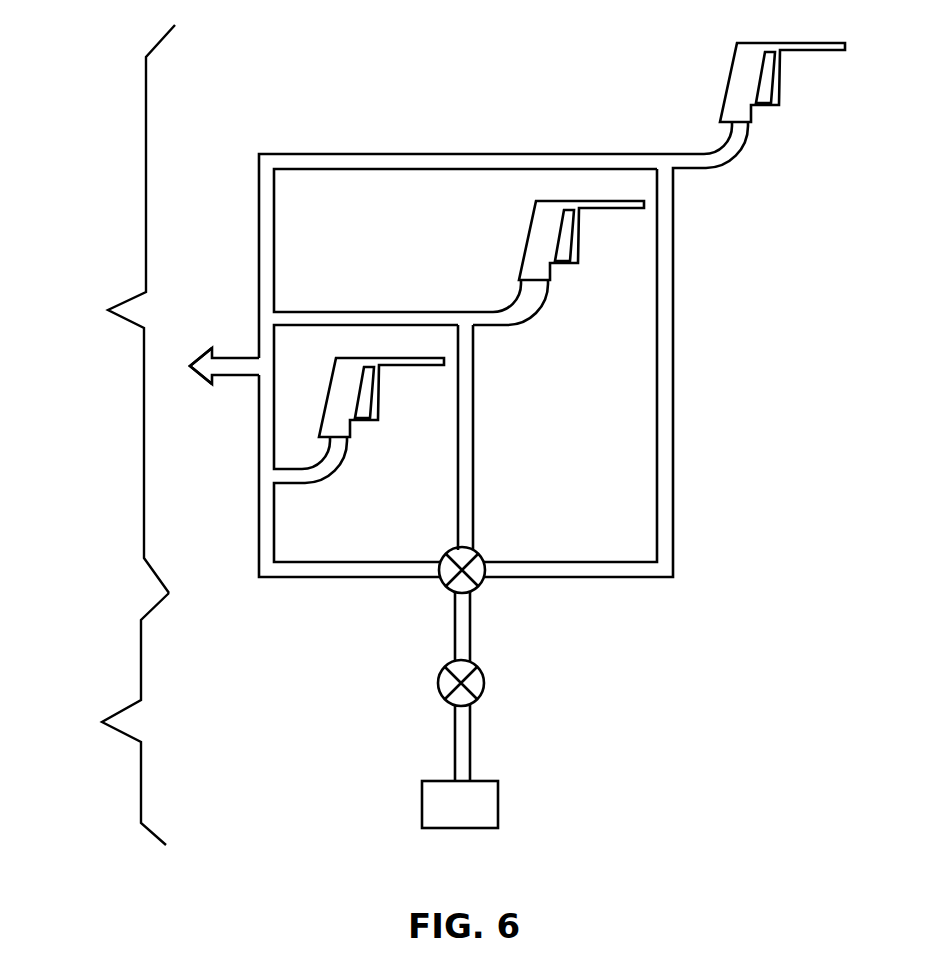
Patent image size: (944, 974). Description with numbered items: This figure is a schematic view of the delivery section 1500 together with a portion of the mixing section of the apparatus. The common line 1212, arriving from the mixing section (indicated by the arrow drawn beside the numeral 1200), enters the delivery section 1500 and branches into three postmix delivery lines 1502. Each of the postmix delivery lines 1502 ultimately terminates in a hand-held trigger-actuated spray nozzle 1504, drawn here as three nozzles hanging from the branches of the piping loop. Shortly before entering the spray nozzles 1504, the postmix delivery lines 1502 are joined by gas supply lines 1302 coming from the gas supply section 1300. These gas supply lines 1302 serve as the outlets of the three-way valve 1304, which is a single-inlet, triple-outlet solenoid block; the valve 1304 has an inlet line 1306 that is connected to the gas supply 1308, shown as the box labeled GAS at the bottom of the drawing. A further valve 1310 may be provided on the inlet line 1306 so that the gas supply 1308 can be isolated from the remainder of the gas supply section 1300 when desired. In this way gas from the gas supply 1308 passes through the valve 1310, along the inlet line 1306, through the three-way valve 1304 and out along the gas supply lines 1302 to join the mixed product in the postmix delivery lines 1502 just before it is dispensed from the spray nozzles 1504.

The delivery section 1500 is at (102, 309).
The postmix delivery line 1502 is at (444, 154).
The hand-held trigger-actuated spray nozzle 1504 is at (785, 52).
The gas supply section 1300 is at (102, 719).
The gas supply line 1302 is at (673, 303).
The 3-way valve 1304 is at (477, 557).
The inlet line 1306 is at (470, 622).
The gas supply 1308 is at (498, 803).
The valve 1310 is at (484, 682).
The flow direction 1200 is at (179, 366).
The common line 1212 is at (224, 349).